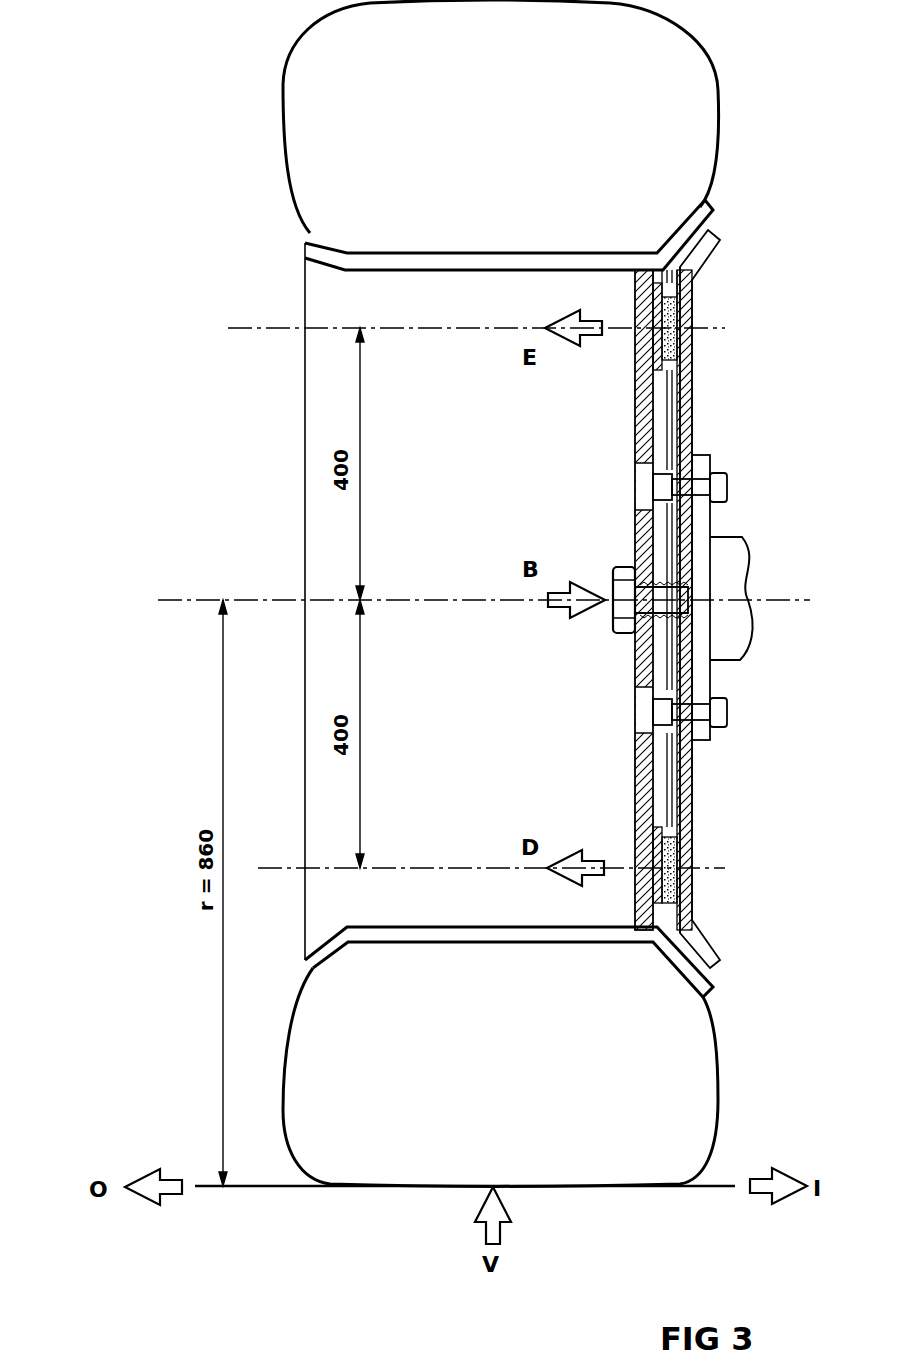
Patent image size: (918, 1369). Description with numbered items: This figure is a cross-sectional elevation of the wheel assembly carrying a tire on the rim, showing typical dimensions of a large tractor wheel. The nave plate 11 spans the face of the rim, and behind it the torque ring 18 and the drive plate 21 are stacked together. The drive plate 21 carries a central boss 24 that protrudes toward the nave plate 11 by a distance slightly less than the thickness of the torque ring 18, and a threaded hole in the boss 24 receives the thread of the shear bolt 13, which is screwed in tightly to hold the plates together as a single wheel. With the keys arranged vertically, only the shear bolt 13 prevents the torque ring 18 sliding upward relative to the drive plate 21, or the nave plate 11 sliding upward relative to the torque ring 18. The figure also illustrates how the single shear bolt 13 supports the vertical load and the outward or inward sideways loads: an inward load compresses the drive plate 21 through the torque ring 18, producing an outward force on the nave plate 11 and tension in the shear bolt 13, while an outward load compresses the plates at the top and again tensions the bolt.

The nave plate 11 is at (635, 800).
The shear bolt 13 is at (628, 623).
The torque ring 18 is at (680, 890).
The drive plate 21 is at (680, 802).
The central boss 24 is at (635, 560).